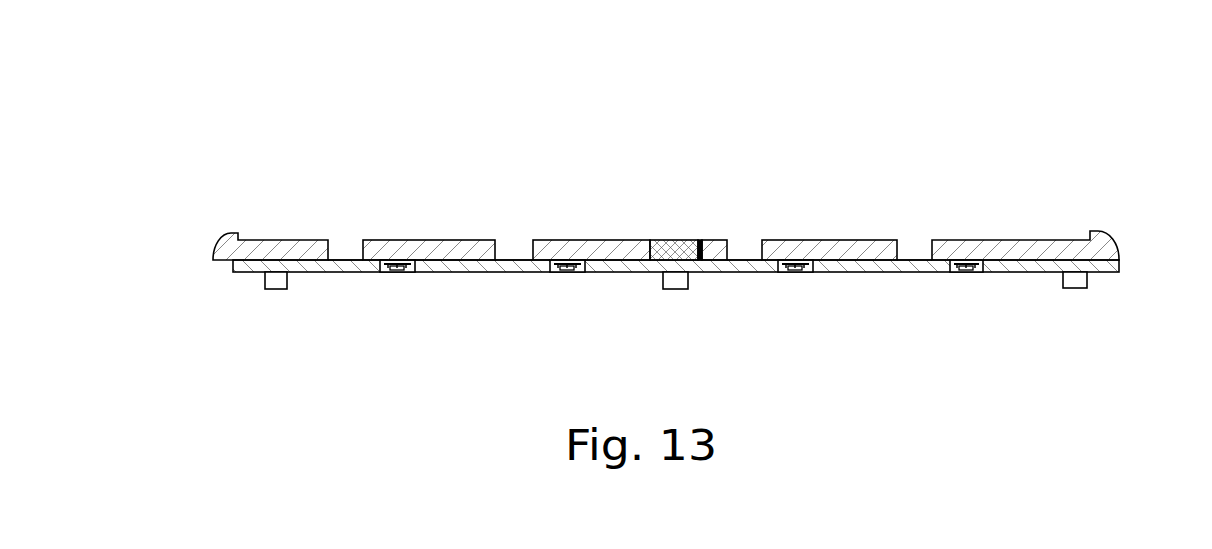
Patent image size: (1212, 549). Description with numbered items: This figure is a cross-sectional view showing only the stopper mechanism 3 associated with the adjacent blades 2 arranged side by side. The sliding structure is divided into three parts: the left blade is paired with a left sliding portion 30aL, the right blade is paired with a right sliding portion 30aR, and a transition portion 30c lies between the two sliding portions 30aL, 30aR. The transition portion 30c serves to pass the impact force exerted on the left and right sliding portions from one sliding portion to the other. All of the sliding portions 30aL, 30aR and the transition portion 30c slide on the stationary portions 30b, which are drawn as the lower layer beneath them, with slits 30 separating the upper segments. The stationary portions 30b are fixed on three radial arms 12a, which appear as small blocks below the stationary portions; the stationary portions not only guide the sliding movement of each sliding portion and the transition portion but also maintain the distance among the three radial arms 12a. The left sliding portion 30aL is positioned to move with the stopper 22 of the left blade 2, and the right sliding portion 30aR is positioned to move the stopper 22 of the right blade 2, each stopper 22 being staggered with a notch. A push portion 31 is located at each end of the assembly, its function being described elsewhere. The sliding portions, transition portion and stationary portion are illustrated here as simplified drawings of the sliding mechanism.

The stopper mechanism 3 is at (672, 199).
The push portion 31 is at (222, 248).
The slit 30 is at (345, 240).
The left sliding portion 30aL is at (410, 230).
The right sliding portion 30aR is at (809, 230).
The transition portion 30c is at (677, 250).
The stationary portion 30b is at (463, 280).
The blade 2 is at (387, 271).
The stopper 22 is at (394, 271).
The radial arm 12a is at (275, 281).